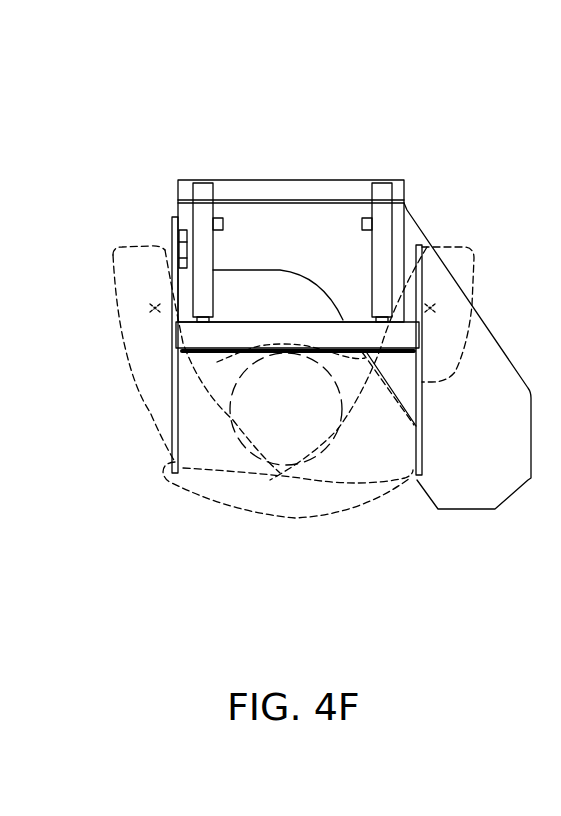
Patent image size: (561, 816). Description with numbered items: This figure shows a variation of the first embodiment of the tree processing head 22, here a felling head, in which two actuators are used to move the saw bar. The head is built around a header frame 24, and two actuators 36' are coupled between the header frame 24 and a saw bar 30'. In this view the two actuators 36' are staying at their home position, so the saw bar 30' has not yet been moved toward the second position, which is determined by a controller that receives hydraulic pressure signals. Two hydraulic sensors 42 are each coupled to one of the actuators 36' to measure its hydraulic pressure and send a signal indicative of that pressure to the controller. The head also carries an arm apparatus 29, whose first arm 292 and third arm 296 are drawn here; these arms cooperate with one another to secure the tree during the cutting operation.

The tree processing head 22 is at (344, 157).
The header frame 24 is at (427, 211).
The hydraulic sensor 42 is at (221, 219).
The actuator 36' is at (293, 240).
The saw bar 30' is at (250, 397).
The first arm 292 is at (147, 413).
The third arm 296 is at (393, 477).
The arm apparatus 29 is at (288, 556).